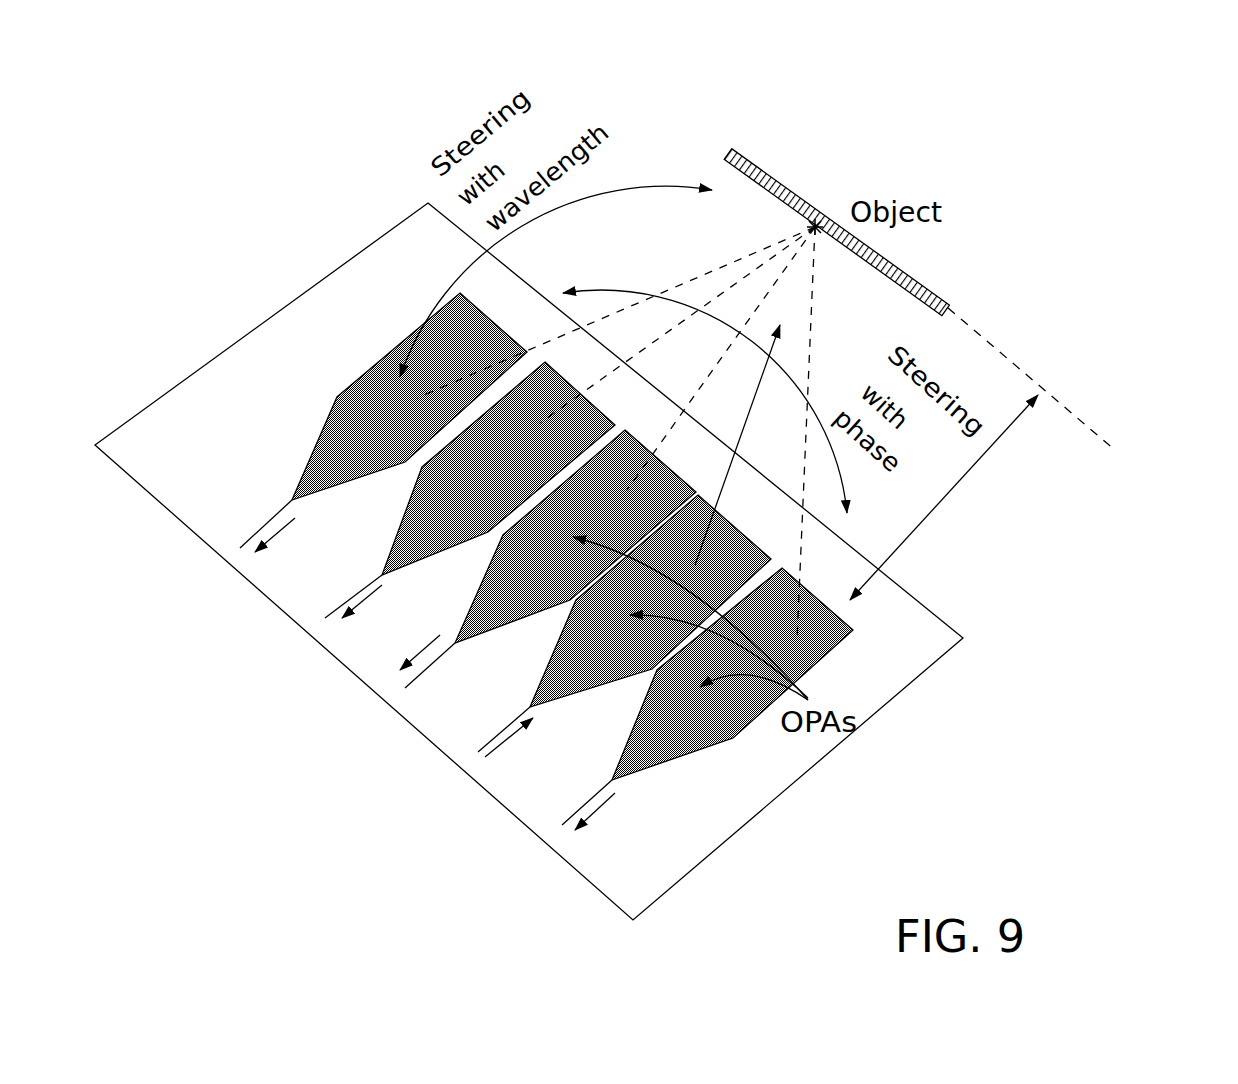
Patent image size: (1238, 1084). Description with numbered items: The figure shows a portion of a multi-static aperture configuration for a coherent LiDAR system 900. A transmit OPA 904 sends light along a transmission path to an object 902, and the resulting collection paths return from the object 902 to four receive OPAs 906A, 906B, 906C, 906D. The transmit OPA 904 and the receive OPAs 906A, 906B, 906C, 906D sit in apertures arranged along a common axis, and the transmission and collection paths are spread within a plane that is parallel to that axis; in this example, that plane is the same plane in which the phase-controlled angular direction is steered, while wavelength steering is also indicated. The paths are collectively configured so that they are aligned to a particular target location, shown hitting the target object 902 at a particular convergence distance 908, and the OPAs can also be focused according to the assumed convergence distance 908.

The coherent LiDAR system 900 is at (262, 156).
The object 902 is at (917, 290).
The transmit OPA 904 is at (628, 643).
The receive OPA 906A is at (716, 714).
The receive OPA 906B is at (566, 576).
The receive OPA 906C is at (495, 506).
The receive OPA 906D is at (398, 438).
The convergence distance 908 is at (1030, 497).